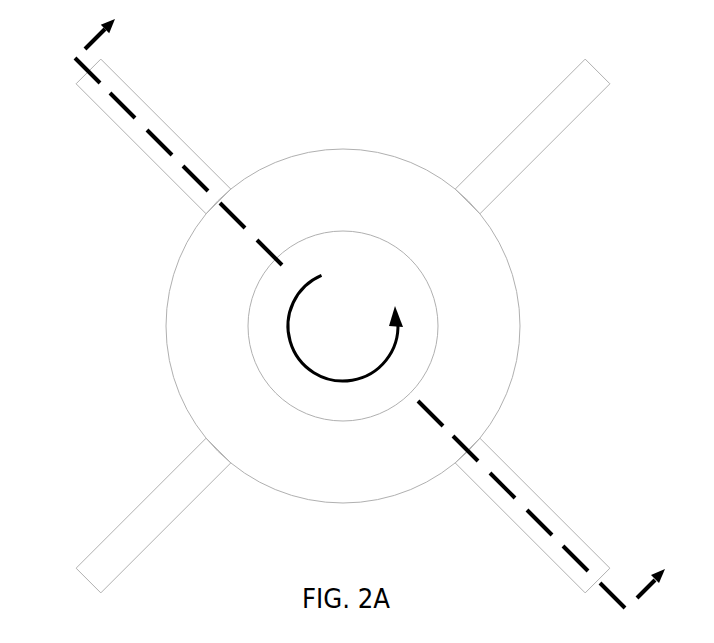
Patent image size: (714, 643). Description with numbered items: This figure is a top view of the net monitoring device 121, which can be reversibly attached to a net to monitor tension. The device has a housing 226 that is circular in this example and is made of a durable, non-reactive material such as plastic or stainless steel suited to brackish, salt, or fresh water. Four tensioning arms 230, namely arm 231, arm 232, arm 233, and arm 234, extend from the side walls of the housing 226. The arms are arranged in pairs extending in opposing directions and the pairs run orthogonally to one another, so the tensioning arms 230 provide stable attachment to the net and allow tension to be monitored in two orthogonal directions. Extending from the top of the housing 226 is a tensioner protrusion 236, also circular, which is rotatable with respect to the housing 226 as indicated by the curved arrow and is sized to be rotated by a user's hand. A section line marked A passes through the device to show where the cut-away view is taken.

The net monitoring device 121 is at (132, 413).
The housing 226 is at (305, 151).
The tensioning arms 230 is at (83, 147).
The arm 231 is at (152, 156).
The arm 232 is at (105, 542).
The arm 233 is at (507, 515).
The arm 234 is at (510, 190).
The tensioner protrusion 236 is at (384, 410).